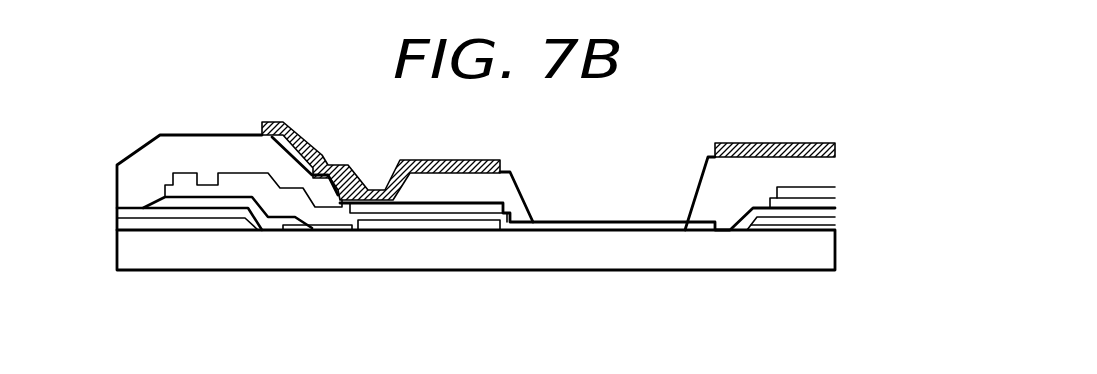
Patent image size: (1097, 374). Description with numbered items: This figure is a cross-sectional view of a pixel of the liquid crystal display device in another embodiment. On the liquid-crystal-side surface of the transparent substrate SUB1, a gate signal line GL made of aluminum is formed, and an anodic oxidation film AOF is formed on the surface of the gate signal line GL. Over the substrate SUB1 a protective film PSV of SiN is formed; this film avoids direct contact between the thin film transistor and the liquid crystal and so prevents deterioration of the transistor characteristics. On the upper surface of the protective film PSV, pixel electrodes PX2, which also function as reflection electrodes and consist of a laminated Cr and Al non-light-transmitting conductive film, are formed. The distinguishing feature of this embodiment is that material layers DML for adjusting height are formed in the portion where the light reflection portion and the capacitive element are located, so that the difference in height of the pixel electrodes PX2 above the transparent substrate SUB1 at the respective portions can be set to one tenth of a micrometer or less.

The transparent substrate SUB1 is at (310, 253).
The protective film PSV is at (150, 160).
The pixel electrode PX2 is at (456, 158).
The material layer for adjusting height DML is at (825, 195).
The anodic oxidation film AOF is at (833, 217).
The gate signal line GL is at (797, 228).